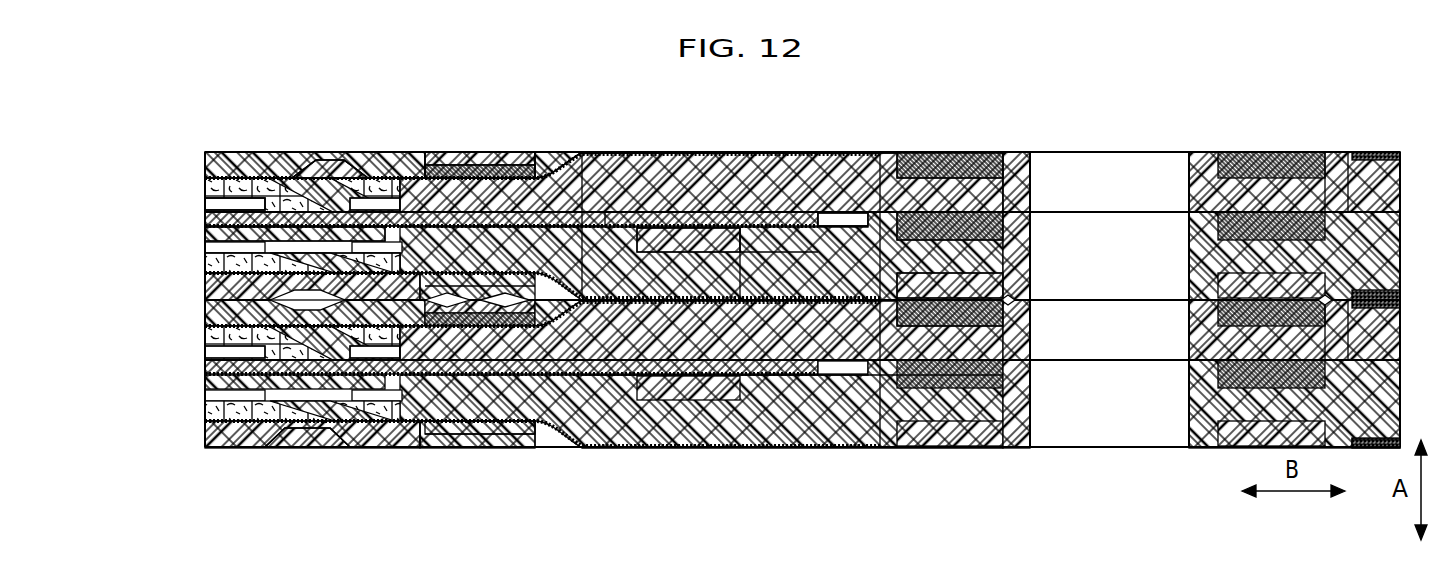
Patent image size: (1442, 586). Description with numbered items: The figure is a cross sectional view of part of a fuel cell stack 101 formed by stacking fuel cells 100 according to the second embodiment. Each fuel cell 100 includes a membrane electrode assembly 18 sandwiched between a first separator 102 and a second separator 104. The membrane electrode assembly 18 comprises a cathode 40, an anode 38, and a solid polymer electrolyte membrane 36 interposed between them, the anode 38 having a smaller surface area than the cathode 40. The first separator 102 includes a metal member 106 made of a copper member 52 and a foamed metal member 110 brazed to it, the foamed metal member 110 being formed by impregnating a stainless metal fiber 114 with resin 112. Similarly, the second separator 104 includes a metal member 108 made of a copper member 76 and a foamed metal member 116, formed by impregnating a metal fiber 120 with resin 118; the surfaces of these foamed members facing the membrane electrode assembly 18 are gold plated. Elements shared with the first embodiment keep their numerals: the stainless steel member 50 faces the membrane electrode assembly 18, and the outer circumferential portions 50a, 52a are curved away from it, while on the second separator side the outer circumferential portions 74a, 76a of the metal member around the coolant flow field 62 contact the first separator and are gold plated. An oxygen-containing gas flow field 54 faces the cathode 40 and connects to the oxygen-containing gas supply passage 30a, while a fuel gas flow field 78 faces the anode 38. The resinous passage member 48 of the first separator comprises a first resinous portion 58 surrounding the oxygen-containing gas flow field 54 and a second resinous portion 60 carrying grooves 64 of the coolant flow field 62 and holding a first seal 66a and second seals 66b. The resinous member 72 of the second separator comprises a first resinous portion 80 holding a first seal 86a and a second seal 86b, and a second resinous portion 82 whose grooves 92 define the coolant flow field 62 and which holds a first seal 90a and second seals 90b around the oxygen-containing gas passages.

The fuel cell stack 101 is at (1036, 80).
The fuel cell 100 is at (99, 155).
The first separator 102 is at (202, 165).
The second separator 104 is at (202, 285).
The metal member 106 is at (656, 150).
The metal member 108 is at (893, 297).
The foamed metal member 110 is at (358, 72).
The resin 112 is at (331, 174).
The stainless metal fiber 114 is at (322, 176).
The foamed metal member 116 is at (326, 486).
The resin 118 is at (266, 438).
The metal fiber 120 is at (307, 436).
The membrane electrode assembly 18 is at (152, 196).
The cathode 40 is at (206, 204).
The solid polymer electrolyte membrane 36 is at (206, 220).
The anode 38 is at (210, 236).
The fuel gas flow field 78 is at (210, 262).
The coolant flow field 62 is at (155, 320).
The grooves 92 is at (210, 320).
The grooves 64 is at (206, 351).
The oxygen-containing gas flow field 54 is at (224, 192).
The second resinous portion 60 is at (252, 190).
The stainless steel member 50 is at (370, 183).
The copper member 52 is at (403, 168).
The resinous passage member 48 is at (413, 148).
The first seal 66a is at (478, 172).
The copper member 76 is at (512, 177).
The resinous member 72 is at (580, 245).
The first resinous portion 58 is at (620, 192).
The first seal 86a is at (688, 252).
The outer circumferential portion 76a is at (752, 283).
The passage 74a is at (797, 290).
The outer circumferential portion 52a is at (850, 295).
The outer circumferential portion 50a is at (862, 297).
The oxygen-containing gas supply passage 30a is at (1112, 156).
The second seal 66b is at (997, 168).
The second seal 86b is at (998, 232).
The second seal 90b is at (998, 287).
The second resinous portion 82 is at (370, 412).
The first seal 90a is at (483, 438).
The first resinous portion 80 is at (597, 375).